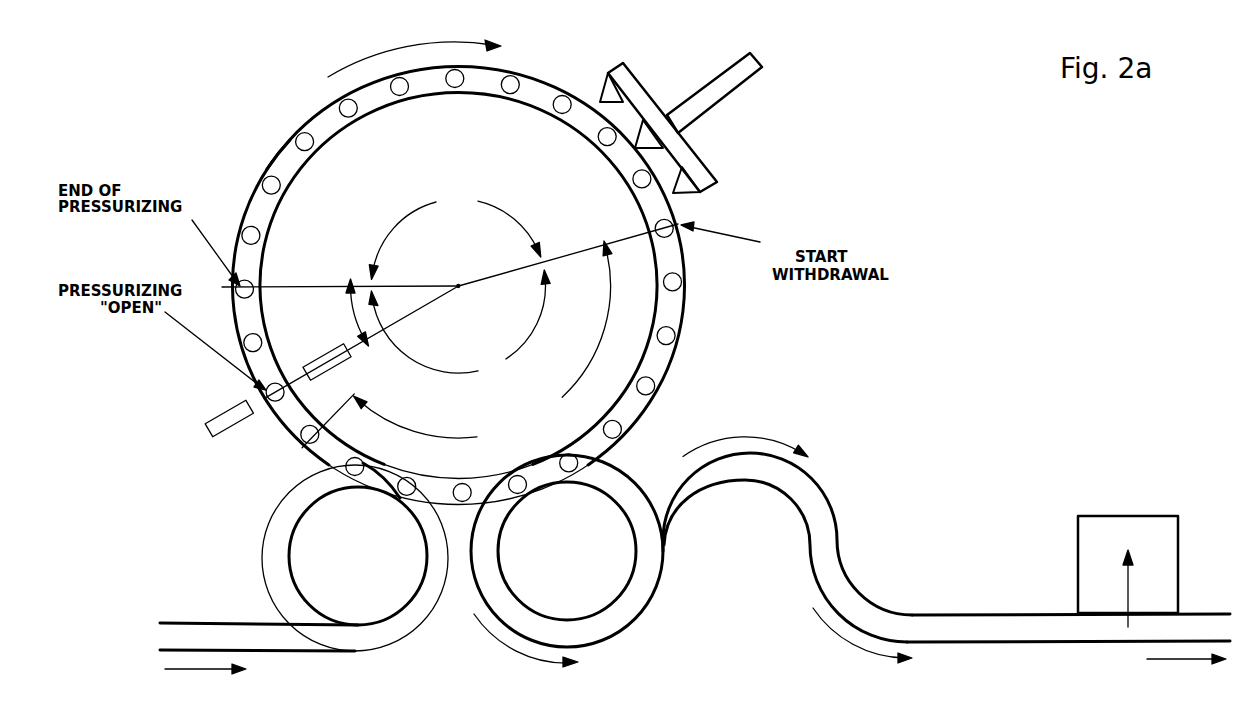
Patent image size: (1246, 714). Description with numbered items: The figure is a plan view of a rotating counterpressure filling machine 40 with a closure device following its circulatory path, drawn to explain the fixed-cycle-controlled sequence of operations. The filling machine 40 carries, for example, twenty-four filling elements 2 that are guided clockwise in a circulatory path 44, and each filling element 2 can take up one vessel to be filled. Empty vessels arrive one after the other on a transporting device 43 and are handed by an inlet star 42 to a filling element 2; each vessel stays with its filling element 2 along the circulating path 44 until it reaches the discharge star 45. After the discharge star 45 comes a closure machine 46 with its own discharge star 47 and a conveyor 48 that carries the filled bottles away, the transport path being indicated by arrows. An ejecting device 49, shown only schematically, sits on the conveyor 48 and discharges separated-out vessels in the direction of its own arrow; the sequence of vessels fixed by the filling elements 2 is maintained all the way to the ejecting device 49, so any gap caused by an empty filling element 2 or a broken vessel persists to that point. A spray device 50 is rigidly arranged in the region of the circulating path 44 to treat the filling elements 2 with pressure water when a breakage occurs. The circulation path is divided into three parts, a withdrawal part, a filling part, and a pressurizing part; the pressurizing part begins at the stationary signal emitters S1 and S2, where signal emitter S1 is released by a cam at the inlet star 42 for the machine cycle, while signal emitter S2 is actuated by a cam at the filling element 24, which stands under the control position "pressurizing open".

The filling elements 2 is at (455, 485).
The filling element 24 is at (274, 401).
The filling machine 40 is at (290, 96).
The inlet star 42 is at (373, 571).
The transporting device 43 is at (208, 635).
The circulatory path 44 is at (278, 167).
The discharge star 45 is at (580, 571).
The closure machine 46 is at (748, 570).
The discharge star 47 is at (918, 570).
The conveyor 48 is at (968, 633).
The ejecting device 49 is at (1167, 575).
The spray device 50 is at (738, 77).
The signal emitter S1 is at (215, 427).
The signal emitter S2 is at (343, 355).